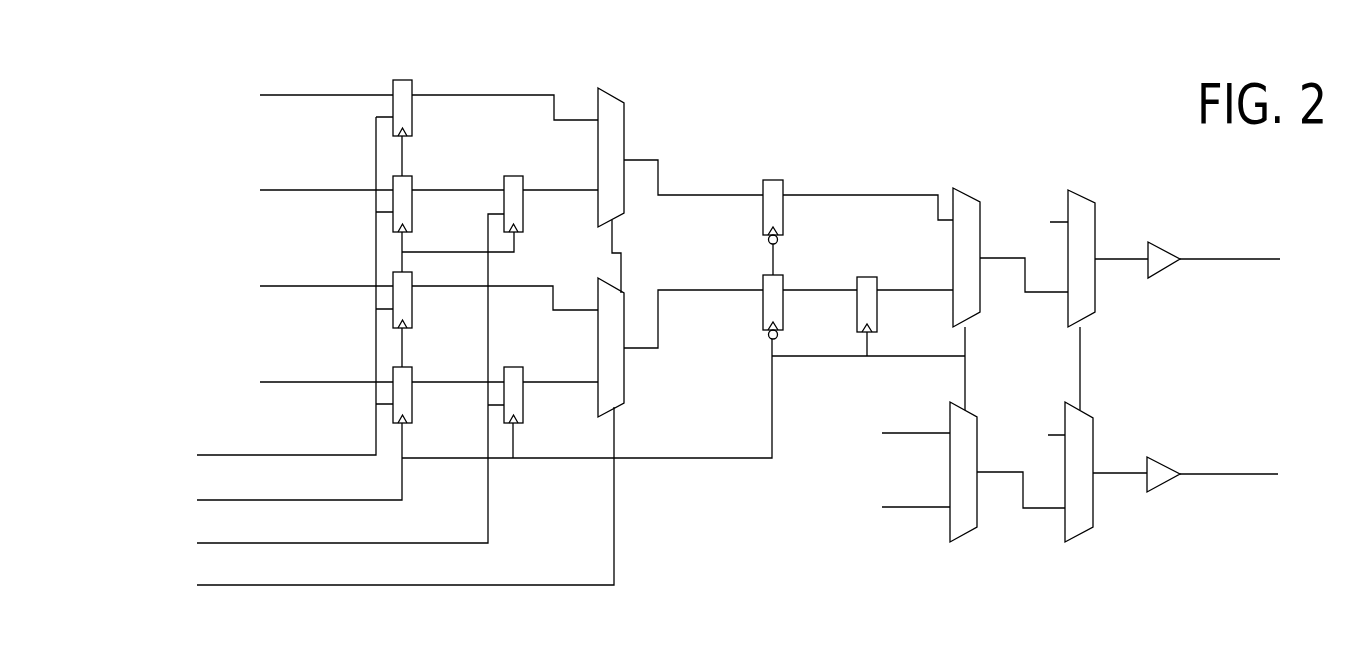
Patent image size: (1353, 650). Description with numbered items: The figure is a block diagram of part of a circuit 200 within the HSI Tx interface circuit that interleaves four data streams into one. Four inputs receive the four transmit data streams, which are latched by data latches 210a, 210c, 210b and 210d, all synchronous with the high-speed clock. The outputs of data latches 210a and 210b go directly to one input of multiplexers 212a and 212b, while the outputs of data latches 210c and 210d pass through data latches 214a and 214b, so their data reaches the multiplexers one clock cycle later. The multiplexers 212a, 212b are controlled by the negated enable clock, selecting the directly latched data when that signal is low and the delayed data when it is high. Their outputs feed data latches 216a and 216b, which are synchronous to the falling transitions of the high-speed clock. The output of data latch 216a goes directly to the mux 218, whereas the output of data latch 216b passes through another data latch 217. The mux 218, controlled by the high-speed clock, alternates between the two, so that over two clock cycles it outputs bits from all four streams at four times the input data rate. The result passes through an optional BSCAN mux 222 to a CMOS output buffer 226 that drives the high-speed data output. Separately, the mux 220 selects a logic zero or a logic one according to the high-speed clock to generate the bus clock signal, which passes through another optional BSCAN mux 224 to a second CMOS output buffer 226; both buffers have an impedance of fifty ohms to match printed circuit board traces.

The circuit 200 is at (1305, 181).
The data latch 210a is at (413, 106).
The data latch 210b is at (413, 298).
The data latch 210c is at (413, 202).
The data latch 210d is at (413, 393).
The multiplexer 212a is at (598, 136).
The multiplexer 212b is at (598, 326).
The data latch 214a is at (524, 205).
The data latch 214b is at (524, 395).
The data latch 216a is at (763, 215).
The data latch 216b is at (762, 310).
The data latch 217 is at (867, 277).
The mux 218 is at (980, 206).
The mux 220 is at (978, 420).
The BSCAN mux 222 is at (1096, 208).
The BSCAN mux 224 is at (1095, 420).
The CMOS output buffer 226 is at (1150, 242).